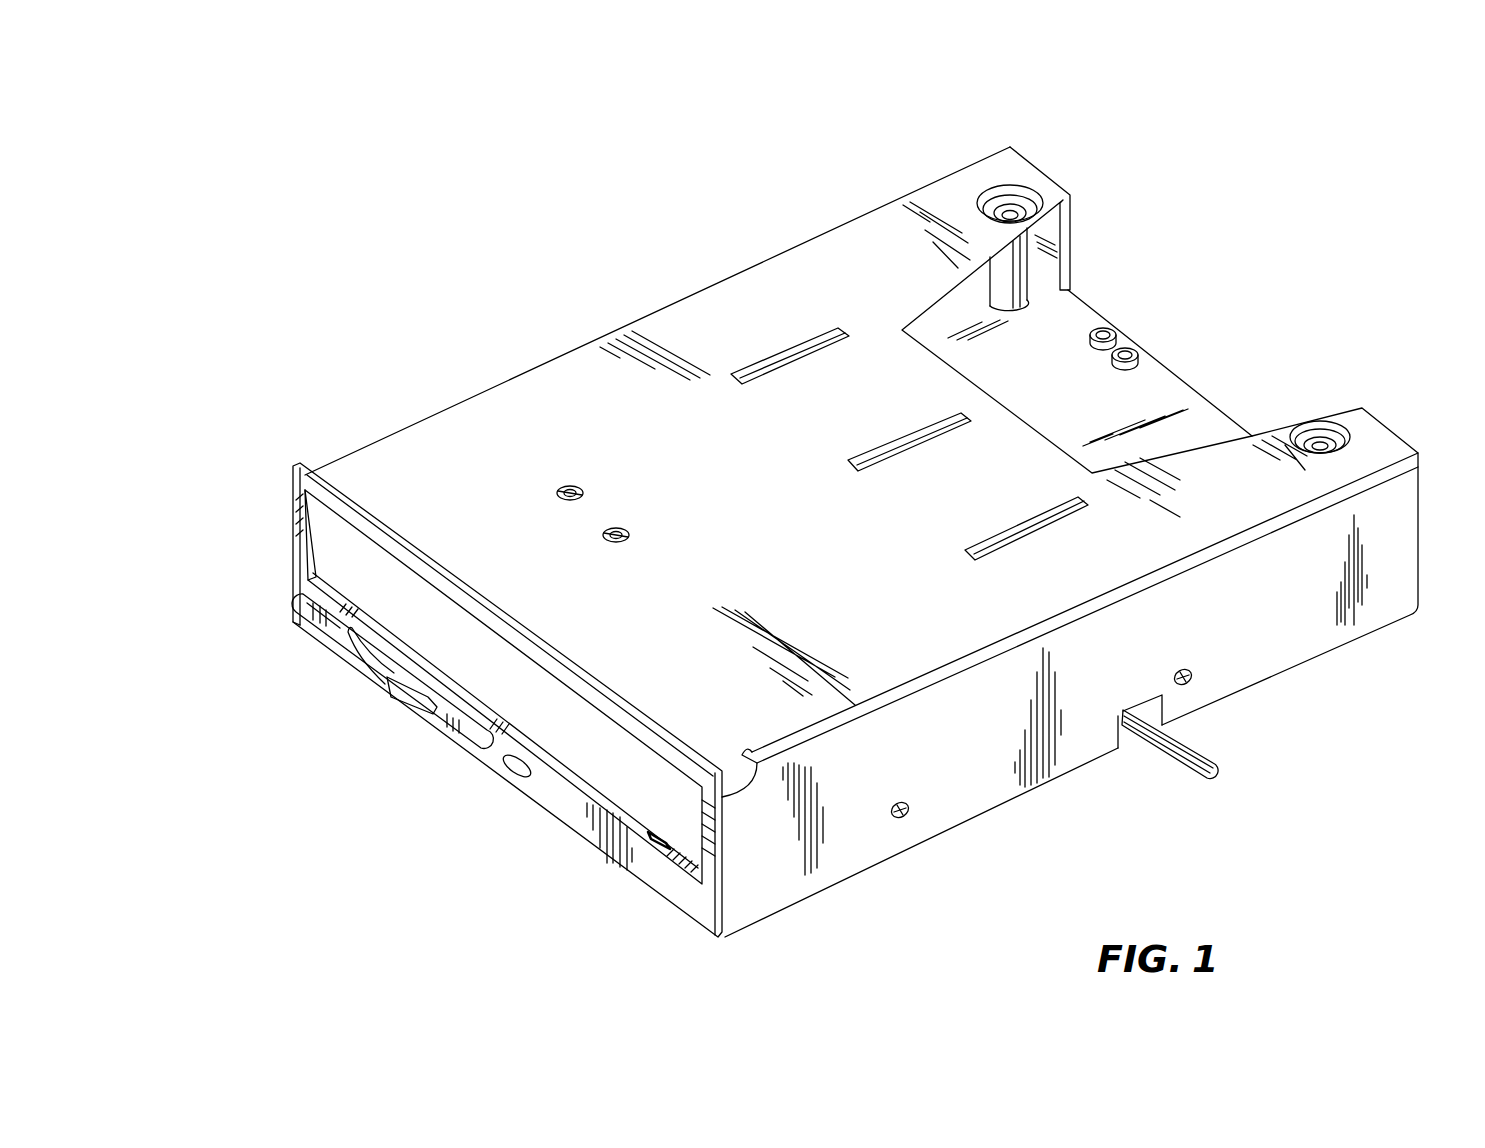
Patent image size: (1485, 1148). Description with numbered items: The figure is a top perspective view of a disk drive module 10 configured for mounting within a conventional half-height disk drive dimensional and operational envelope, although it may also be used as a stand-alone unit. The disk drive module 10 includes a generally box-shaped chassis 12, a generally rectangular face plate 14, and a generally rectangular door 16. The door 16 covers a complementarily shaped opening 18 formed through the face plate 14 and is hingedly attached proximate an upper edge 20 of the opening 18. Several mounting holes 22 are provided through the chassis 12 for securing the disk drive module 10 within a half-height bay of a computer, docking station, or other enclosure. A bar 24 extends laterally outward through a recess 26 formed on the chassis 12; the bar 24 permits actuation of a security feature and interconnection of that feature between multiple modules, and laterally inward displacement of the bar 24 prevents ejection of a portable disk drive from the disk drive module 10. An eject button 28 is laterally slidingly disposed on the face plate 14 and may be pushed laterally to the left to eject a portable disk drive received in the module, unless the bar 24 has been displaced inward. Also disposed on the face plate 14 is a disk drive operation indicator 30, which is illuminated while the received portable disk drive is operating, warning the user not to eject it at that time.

The disk drive module 10 is at (442, 176).
The chassis 12 is at (537, 365).
The face plate 14 is at (635, 882).
The door 16 is at (300, 574).
The opening 18 is at (697, 830).
The upper edge 20 is at (353, 530).
The mounting holes 22 is at (577, 493).
The bar 24 is at (1195, 780).
The recess 26 is at (1120, 737).
The eject button 28 is at (368, 686).
The disk drive operation indicator 30 is at (510, 776).